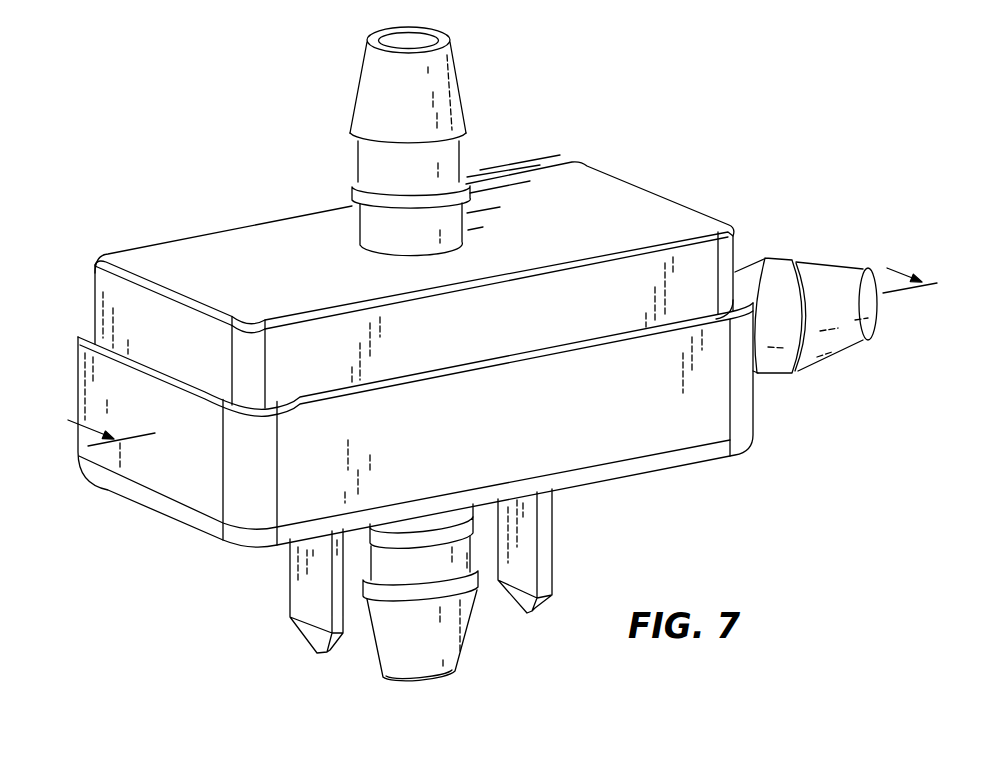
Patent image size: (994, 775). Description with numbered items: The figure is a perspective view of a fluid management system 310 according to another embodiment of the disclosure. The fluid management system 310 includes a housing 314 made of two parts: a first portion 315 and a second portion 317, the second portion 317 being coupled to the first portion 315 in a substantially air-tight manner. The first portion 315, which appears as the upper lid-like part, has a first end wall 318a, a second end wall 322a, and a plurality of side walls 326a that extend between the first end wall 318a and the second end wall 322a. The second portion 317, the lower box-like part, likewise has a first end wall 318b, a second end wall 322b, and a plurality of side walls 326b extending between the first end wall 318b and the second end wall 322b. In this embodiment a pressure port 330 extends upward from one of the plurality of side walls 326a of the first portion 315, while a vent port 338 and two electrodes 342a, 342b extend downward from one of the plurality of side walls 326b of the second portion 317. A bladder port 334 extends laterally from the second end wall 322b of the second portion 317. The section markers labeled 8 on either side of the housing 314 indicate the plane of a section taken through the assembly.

The fluid management system 310 is at (146, 121).
The housing 314 is at (745, 241).
The first portion 315 is at (152, 231).
The second portion 317 is at (722, 487).
The first end wall 318a is at (130, 322).
The first end wall 318b is at (170, 472).
The second end wall 322a is at (626, 182).
The second end wall 322b is at (755, 410).
The side walls 326a is at (328, 355).
The side walls 326b is at (313, 485).
The pressure port 330 is at (380, 107).
The bladder port 334 is at (810, 270).
The vent port 338 is at (455, 625).
The electrode 342a is at (317, 622).
The electrode 342b is at (543, 568).
The section line 8- 8 is at (494, 344).